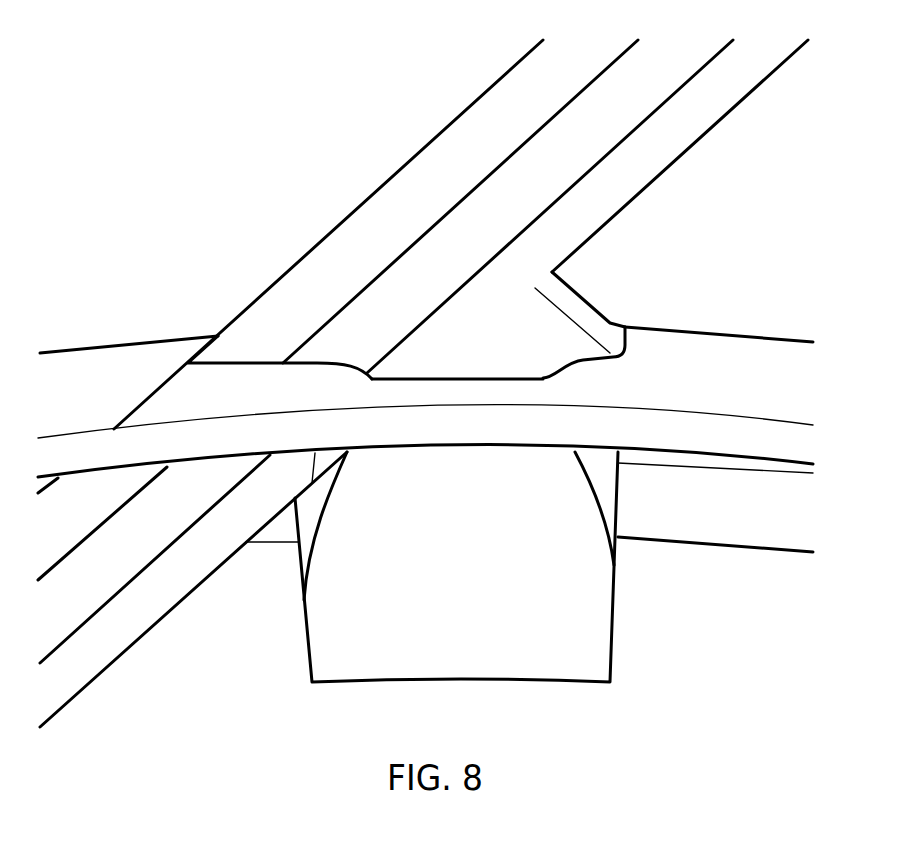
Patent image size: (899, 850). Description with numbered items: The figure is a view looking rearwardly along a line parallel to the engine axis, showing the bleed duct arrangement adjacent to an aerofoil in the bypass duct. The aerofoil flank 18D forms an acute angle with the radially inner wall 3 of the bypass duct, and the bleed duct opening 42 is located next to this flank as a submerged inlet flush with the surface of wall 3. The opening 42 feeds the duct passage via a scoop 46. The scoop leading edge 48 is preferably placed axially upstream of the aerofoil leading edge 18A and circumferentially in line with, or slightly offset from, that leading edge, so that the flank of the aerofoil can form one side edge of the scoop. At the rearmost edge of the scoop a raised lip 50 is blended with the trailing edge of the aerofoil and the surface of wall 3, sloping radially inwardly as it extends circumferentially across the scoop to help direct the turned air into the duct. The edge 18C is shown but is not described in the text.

The radially inner wall 3 is at (763, 363).
The aerofoil leading edge 18A is at (358, 328).
The blade leading edge 18C is at (386, 180).
The aerofoil flank 18D is at (664, 171).
The bleed duct opening 42 is at (542, 353).
The scoop 46 is at (482, 602).
The scoop leading edge 48 is at (490, 380).
The raised lip 50 is at (578, 312).